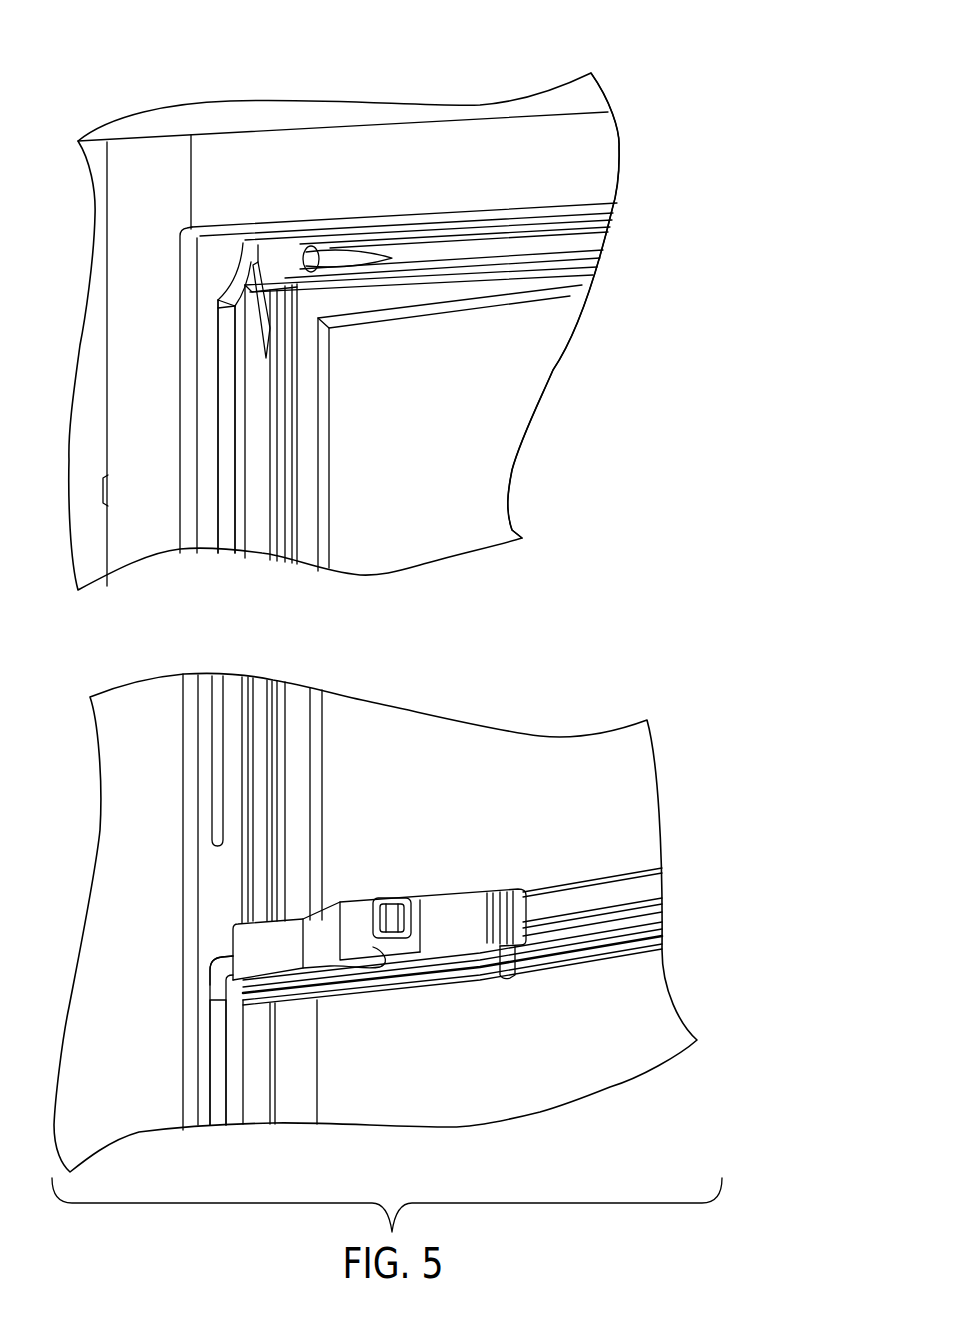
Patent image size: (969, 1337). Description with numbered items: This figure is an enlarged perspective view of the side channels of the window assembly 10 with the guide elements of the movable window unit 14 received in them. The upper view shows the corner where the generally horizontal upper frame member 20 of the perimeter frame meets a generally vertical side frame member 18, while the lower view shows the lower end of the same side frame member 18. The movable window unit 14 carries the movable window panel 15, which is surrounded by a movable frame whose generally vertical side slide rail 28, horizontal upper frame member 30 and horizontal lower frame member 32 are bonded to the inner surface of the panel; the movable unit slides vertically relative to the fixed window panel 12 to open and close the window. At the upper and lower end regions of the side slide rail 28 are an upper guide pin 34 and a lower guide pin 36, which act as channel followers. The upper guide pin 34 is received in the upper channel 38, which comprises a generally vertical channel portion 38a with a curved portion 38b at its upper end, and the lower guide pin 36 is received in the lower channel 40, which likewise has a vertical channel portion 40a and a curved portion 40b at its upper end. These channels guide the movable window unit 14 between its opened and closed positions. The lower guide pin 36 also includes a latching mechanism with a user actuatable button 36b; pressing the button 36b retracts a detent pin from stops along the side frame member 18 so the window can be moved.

The window assembly 10 is at (620, 60).
The fixed window panel 12 is at (578, 1085).
The movable window unit 14 is at (512, 397).
The movable window panel 15 is at (482, 455).
The side frame member 18 is at (201, 365).
The upper frame member 20 is at (483, 138).
The side slide rail 28 is at (318, 480).
The upper frame member of movable frame 30 is at (513, 294).
The lower frame member of movable frame 32 is at (578, 896).
The upper guide pin 34 is at (246, 253).
The lower guide pin 36 is at (255, 912).
The button 36b is at (384, 918).
The upper channel 38 is at (226, 546).
The vertical channel portion of upper channel 38a is at (227, 458).
The curved portion of upper channel 38b is at (227, 292).
The lower channel 40 is at (215, 1124).
The vertical channel portion of lower channel 40a is at (217, 1072).
The curved portion of lower channel 40b is at (224, 967).